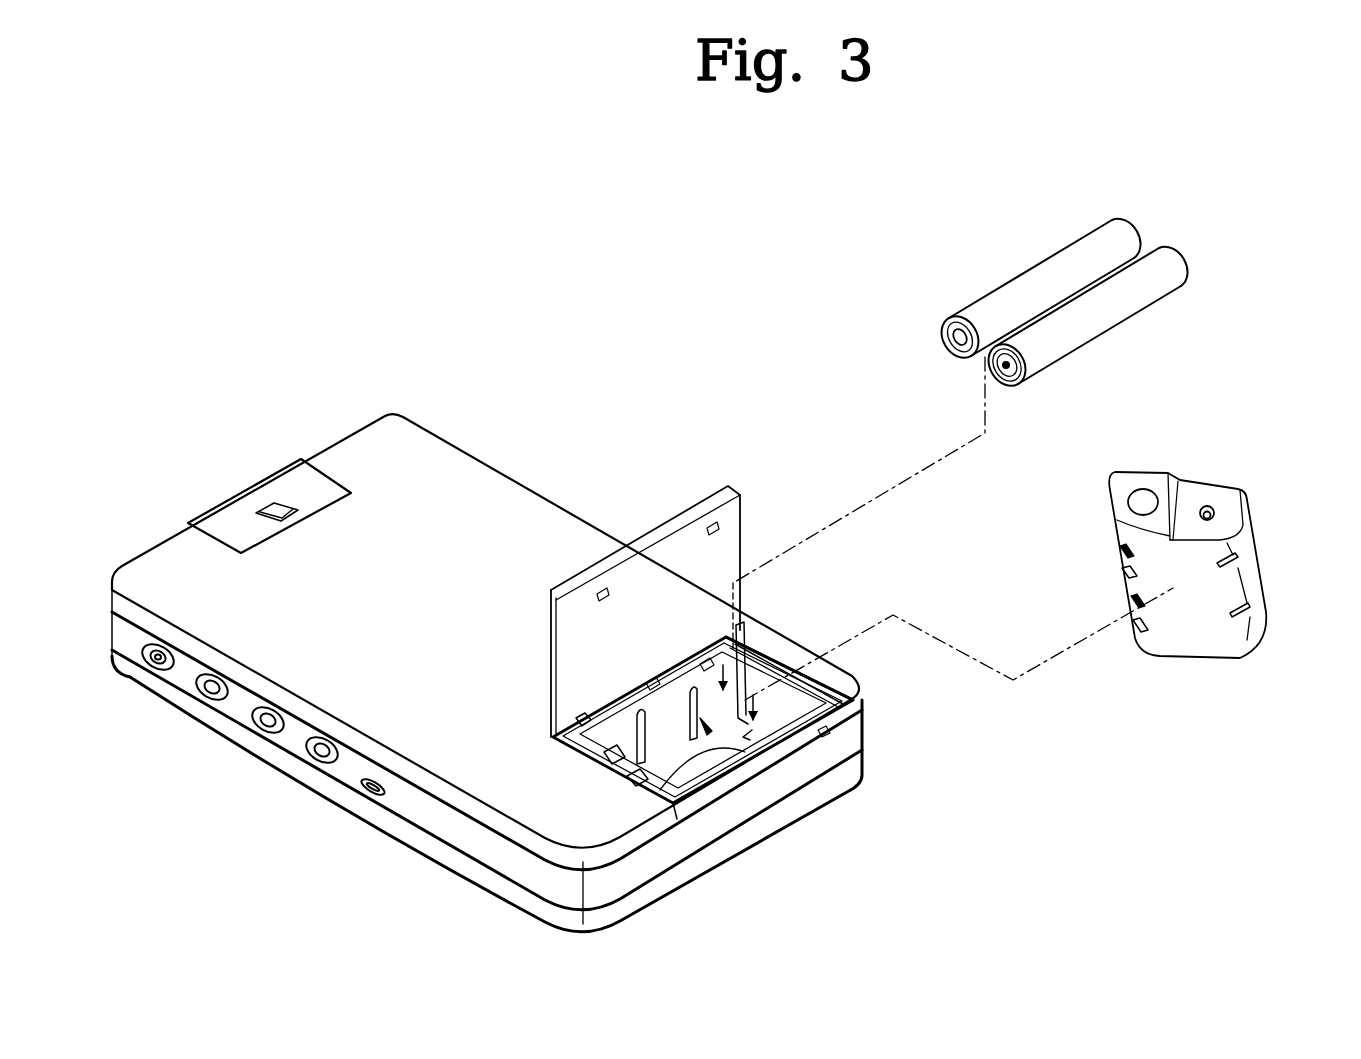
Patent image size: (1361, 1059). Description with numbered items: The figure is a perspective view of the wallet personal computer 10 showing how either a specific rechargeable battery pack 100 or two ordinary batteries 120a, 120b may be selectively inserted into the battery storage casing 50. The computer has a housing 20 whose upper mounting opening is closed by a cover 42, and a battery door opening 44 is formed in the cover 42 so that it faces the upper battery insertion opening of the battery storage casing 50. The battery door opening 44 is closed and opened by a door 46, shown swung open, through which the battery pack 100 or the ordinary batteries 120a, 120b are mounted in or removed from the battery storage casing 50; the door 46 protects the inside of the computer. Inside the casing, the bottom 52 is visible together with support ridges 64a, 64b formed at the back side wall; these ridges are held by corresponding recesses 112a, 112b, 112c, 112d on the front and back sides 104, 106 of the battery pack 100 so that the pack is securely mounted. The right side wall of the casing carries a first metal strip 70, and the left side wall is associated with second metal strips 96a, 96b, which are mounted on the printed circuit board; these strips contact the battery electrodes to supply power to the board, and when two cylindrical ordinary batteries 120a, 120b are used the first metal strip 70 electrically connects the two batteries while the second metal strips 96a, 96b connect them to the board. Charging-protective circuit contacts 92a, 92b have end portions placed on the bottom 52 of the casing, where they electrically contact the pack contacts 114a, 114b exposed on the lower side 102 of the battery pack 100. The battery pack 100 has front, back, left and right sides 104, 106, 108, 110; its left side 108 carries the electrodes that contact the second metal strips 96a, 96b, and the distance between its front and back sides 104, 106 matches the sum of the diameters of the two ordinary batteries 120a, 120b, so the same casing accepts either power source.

The wallet personal computer 10 is at (430, 267).
The housing 20 is at (718, 830).
The cover 42 is at (500, 482).
The battery door opening 44 is at (747, 752).
The door 46 is at (693, 515).
The battery storage casing 50 is at (780, 735).
The bottom 52 is at (853, 703).
The support ridge 64a is at (762, 682).
The support ridge 64b is at (673, 743).
The first metal strip 70 is at (755, 700).
The charging-protective circuit contact 92a is at (623, 703).
The charging-protective circuit contact 92b is at (700, 690).
The second metal strip 96a is at (605, 756).
The second metal strip 96b is at (635, 779).
The battery pack 100 is at (1172, 587).
The lower side 102 is at (1198, 648).
The front side 104 is at (1247, 540).
The back side 106 is at (1112, 484).
The left side 108 is at (1167, 485).
The right side 110 is at (1269, 626).
The recess 112a is at (1125, 572).
The recess 112b is at (1135, 632).
The recess 112c is at (1240, 560).
The recess 112d is at (1252, 610).
The pack contact 114a is at (1120, 548).
The pack contact 114b is at (1130, 598).
The ordinary battery 120a is at (1112, 228).
The ordinary battery 120b is at (1172, 256).